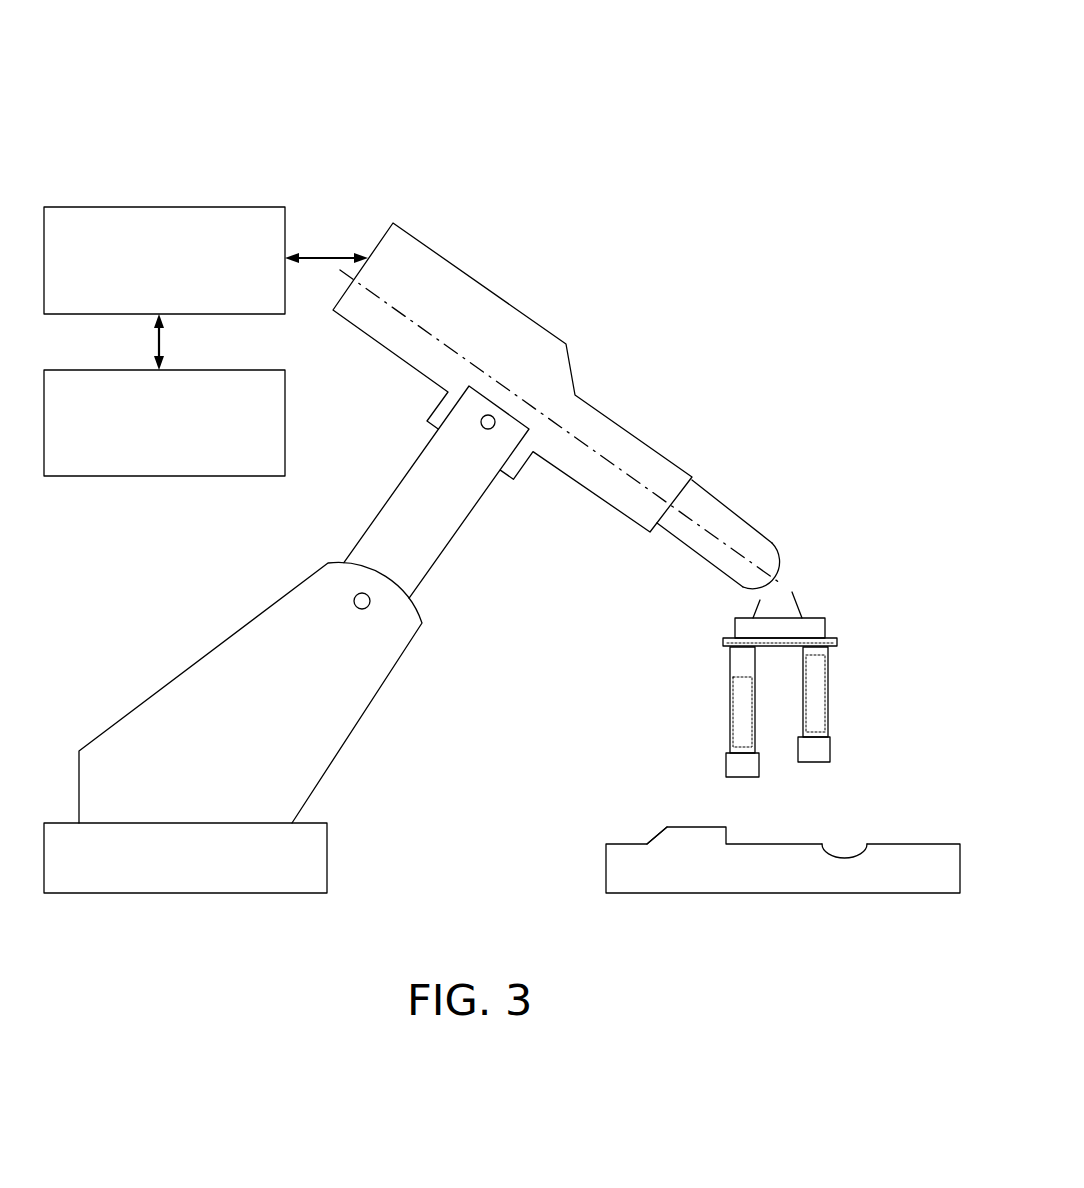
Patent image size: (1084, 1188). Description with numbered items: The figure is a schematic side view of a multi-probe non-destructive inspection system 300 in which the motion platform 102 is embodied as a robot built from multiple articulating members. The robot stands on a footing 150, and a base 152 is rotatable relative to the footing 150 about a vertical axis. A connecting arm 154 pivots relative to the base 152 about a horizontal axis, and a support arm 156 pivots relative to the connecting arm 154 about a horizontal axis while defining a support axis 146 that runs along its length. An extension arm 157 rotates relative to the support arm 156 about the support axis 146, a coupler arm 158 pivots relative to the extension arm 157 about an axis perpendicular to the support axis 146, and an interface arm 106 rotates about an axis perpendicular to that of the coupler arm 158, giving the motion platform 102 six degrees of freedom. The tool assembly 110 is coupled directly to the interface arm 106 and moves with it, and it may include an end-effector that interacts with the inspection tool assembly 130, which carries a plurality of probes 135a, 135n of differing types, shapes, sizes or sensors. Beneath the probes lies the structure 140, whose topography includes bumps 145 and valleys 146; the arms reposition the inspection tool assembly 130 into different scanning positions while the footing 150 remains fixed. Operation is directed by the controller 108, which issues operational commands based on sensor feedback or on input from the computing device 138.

The multi-probe non-destructive inspection system 300 is at (264, 64).
The controller 108 is at (236, 272).
The computing device 138 is at (146, 449).
The motion platform 102 is at (337, 523).
The footing 150 is at (313, 862).
The base 152 is at (340, 735).
The connecting arm 154 is at (430, 550).
The support arm 156 is at (562, 367).
The support axis 146 is at (403, 313).
The extension arm 157 is at (692, 533).
The coupler arm 158 is at (763, 600).
The interface arm 106 is at (782, 600).
The tool assembly 110 is at (808, 630).
The inspection tool assembly 130 is at (691, 691).
The probe 135a is at (738, 765).
The probe 135n is at (813, 749).
The structure 140 is at (620, 872).
The bump 145 is at (650, 842).